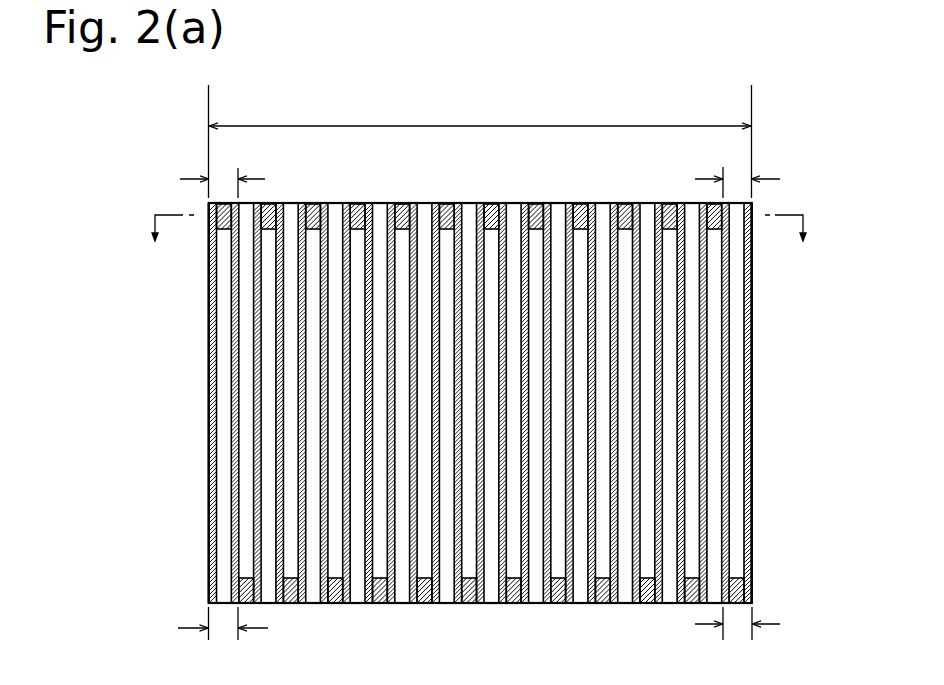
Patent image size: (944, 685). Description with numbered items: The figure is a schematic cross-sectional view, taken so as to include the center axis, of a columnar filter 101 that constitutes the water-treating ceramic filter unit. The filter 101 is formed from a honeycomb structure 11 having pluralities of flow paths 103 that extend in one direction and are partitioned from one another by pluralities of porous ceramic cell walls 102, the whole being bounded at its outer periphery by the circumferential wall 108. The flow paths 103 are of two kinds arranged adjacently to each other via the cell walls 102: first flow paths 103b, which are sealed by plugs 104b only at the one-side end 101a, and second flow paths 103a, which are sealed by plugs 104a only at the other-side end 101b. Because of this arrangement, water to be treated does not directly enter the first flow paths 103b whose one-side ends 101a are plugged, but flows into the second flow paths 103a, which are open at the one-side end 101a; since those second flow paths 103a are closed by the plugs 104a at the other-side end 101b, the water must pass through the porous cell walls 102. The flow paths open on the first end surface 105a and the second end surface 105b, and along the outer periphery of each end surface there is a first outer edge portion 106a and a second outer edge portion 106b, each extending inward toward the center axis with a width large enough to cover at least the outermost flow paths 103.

The filter 101 is at (505, 378).
The honeycomb structure 11 is at (752, 302).
The cell wall 102 is at (728, 370).
The flow path 103 is at (553, 402).
The second flow path 103a is at (528, 281).
The first flow path 103b is at (539, 546).
The plug 104a is at (621, 202).
The plug 104b is at (648, 605).
The circumferential wall 108 is at (752, 517).
The one-side end 101a is at (532, 605).
The other-side end 101b is at (515, 201).
The first end surface 105a is at (480, 633).
The second end surface 105b is at (480, 173).
The first outer edge portion 106a is at (228, 628).
The second outer edge portion 106b is at (226, 179).